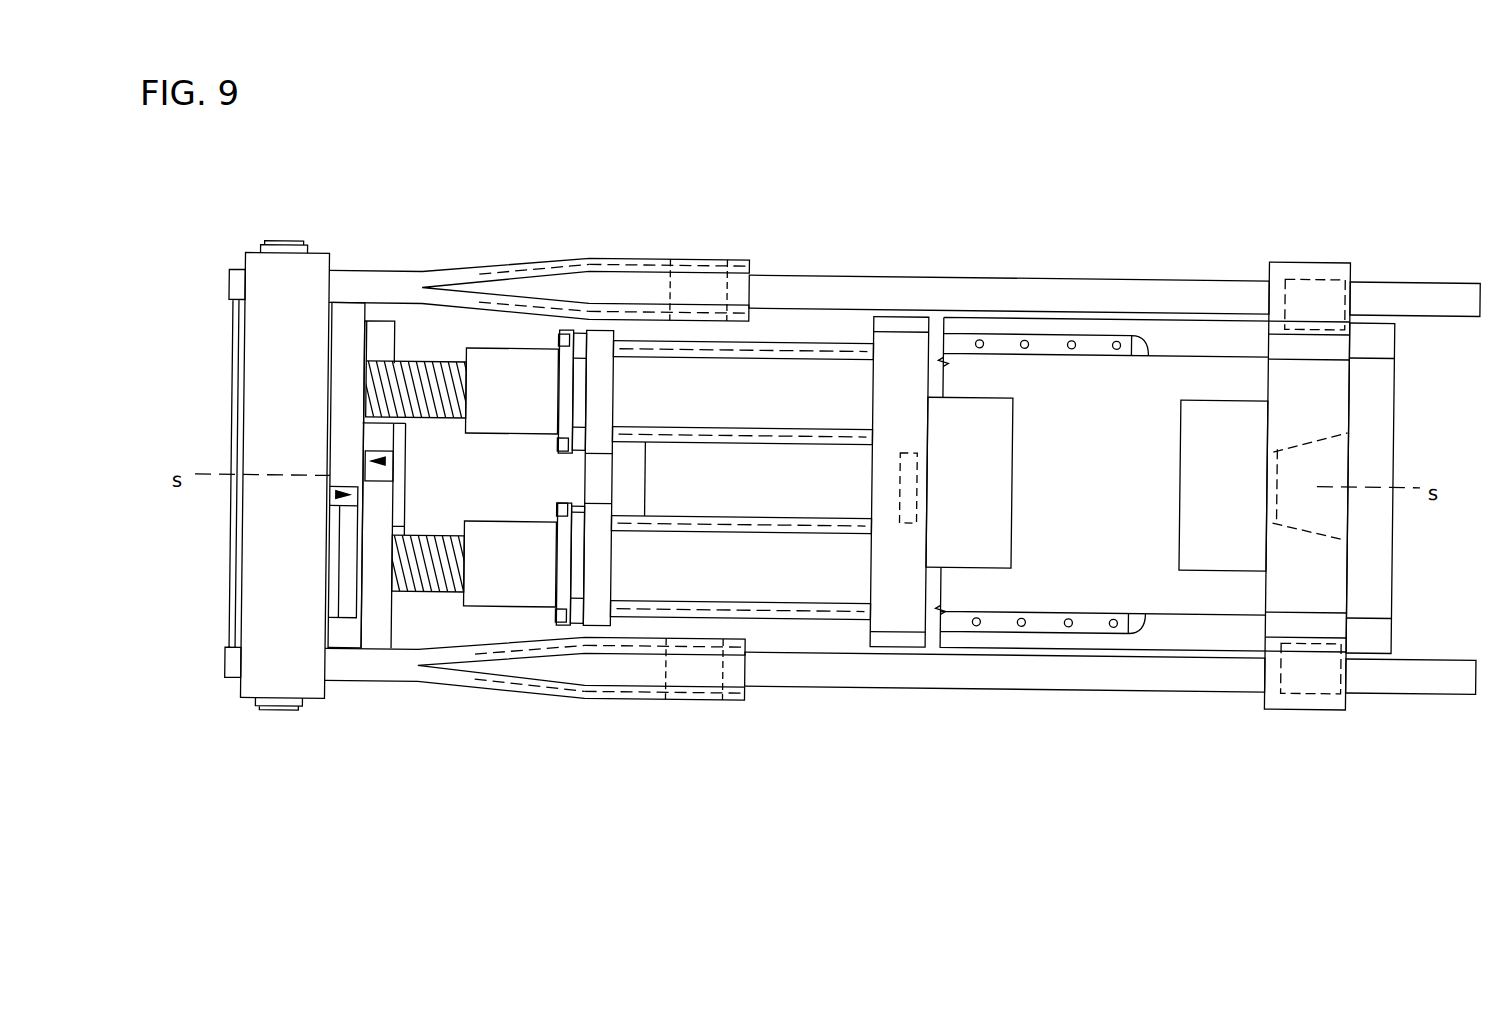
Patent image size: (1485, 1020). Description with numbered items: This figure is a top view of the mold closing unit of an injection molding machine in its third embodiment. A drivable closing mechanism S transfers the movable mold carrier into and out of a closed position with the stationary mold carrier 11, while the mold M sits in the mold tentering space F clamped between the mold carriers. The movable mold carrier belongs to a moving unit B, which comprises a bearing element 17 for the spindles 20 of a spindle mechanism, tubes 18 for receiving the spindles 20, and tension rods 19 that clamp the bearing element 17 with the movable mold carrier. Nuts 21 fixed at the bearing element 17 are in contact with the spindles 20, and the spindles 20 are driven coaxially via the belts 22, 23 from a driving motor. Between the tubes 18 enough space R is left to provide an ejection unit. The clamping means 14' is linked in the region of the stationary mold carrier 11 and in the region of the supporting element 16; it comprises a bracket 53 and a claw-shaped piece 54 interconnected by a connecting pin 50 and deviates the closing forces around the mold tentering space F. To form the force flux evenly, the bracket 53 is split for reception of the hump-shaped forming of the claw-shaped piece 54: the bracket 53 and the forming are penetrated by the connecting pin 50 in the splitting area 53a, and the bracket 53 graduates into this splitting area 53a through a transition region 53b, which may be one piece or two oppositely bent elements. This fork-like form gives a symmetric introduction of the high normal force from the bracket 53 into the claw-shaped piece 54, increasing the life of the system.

The stationary mold carrier 11 is at (1278, 252).
The clamping means 14' is at (1007, 496).
The supporting element 16 is at (298, 426).
The bearing element 17 is at (595, 533).
The tubes 18 is at (741, 480).
The tension rods 19 is at (818, 549).
The spindles 20 is at (433, 552).
The nuts 21 is at (524, 412).
The belt 22 is at (348, 320).
The belt 23 is at (377, 632).
The connecting pin 50 is at (693, 282).
The bracket 53 is at (537, 481).
The splitting area 53a is at (642, 263).
The transition region 53b is at (535, 258).
The claw-shaped piece 54 is at (1075, 281).
The closing mechanism S is at (403, 348).
The moving unit B is at (805, 325).
The space R is at (816, 496).
The mold M is at (974, 495).
The mold tentering space F is at (1099, 502).